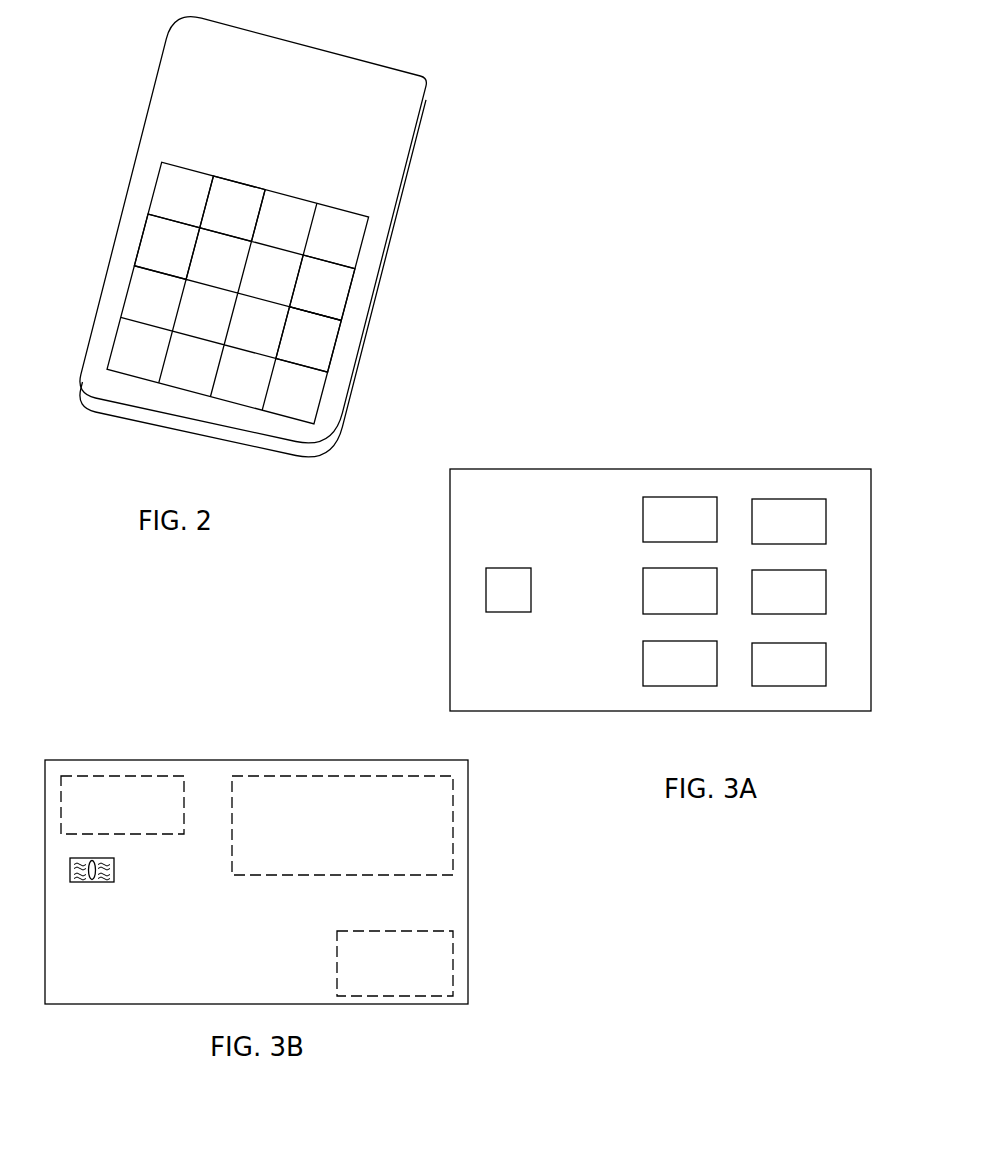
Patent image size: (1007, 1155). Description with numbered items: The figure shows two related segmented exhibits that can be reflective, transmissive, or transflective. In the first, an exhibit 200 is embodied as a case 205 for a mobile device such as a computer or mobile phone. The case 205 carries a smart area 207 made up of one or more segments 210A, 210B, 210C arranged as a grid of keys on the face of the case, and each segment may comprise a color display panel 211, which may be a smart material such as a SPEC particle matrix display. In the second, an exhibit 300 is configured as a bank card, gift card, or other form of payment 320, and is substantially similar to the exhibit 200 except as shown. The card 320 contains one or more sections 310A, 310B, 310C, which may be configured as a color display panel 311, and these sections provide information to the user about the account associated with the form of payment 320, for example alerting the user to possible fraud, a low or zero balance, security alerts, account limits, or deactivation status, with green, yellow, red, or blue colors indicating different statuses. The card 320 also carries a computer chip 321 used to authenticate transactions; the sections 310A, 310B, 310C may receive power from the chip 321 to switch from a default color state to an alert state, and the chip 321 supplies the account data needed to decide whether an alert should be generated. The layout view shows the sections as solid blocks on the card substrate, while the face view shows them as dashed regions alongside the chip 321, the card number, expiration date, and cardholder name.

In FIG. 2, the exhibit 200 is at (98, 103).
In FIG. 2, the case 205 is at (397, 204).
In FIG. 2, the smart area 207 is at (378, 232).
In FIG. 2, the segment 210A is at (239, 181).
In FIG. 2, the segment 210B is at (353, 276).
In FIG. 2, the segment 210C is at (156, 267).
In FIG. 2, the color display panel 211 is at (328, 332).
In FIG. 3A, the exhibit 300 is at (630, 432).
In FIG. 3B, the exhibit 300 is at (155, 729).
In FIG. 3A, the form of payment 320 is at (724, 469).
In FIG. 3A, the chip 321 is at (486, 591).
In FIG. 3B, the chip 321 is at (70, 865).
In FIG. 3A, the section 310A is at (642, 526).
In FIG. 3B, the section 310A is at (311, 776).
In FIG. 3A, the section 310B is at (752, 606).
In FIG. 3B, the section 310B is at (452, 962).
In FIG. 3A, the section 310C is at (643, 671).
In FIG. 3B, the section 310C is at (165, 776).
In FIG. 3A, the color display panel 311 is at (788, 598).